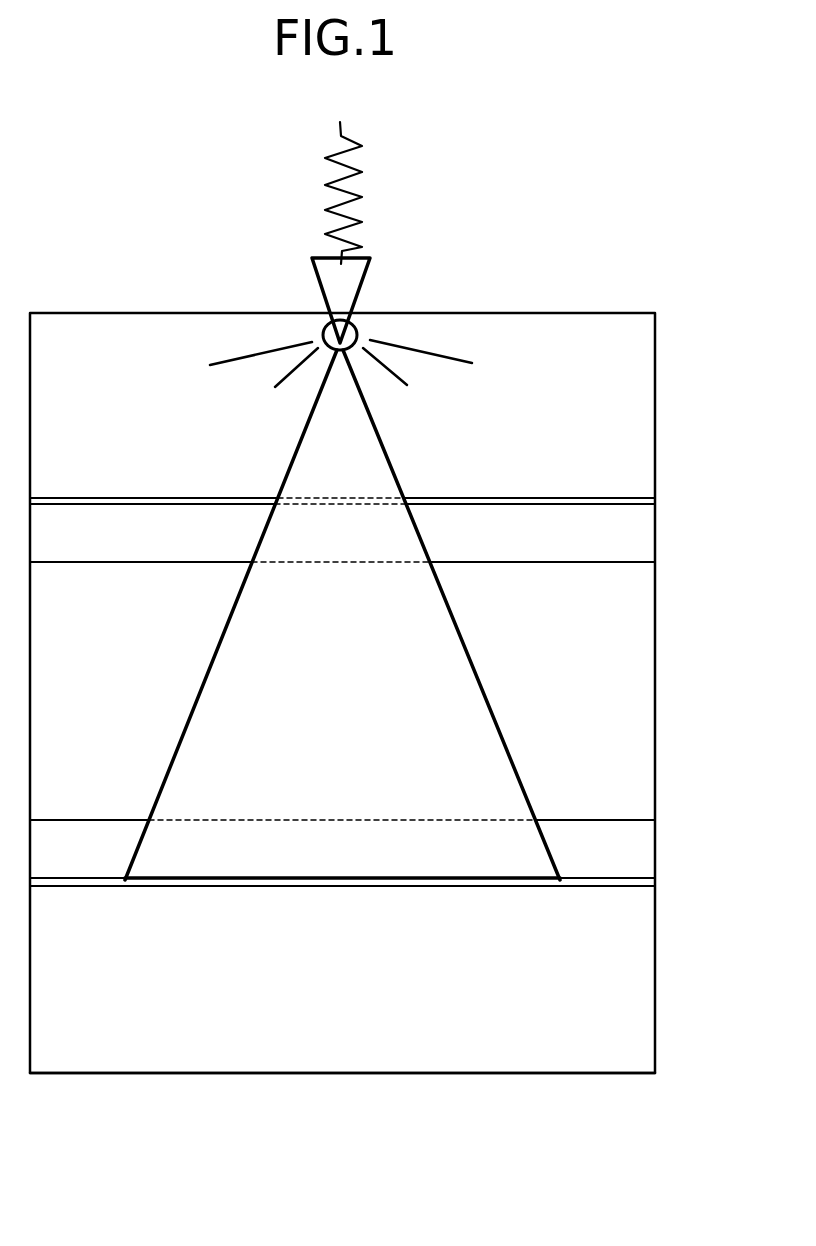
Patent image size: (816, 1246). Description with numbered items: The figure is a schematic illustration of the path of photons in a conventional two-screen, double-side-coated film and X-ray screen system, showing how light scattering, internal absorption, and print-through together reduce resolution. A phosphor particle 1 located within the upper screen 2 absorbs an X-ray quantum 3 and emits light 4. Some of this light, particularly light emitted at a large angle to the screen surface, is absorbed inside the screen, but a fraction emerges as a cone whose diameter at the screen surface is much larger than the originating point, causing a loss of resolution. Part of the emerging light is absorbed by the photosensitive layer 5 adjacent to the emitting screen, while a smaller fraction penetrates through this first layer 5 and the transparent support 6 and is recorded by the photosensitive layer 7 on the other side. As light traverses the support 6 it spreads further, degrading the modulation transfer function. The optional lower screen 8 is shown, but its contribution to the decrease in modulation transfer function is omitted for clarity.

The phosphor particle 1 is at (357, 320).
The upper screen 2 is at (655, 363).
The X-ray quantum 3 is at (355, 197).
The emitted light 4 is at (307, 362).
The photosensitive layer 5 is at (655, 527).
The transparent support 6 is at (655, 682).
The photosensitive layer 7 is at (655, 843).
The lower screen 8 is at (655, 965).